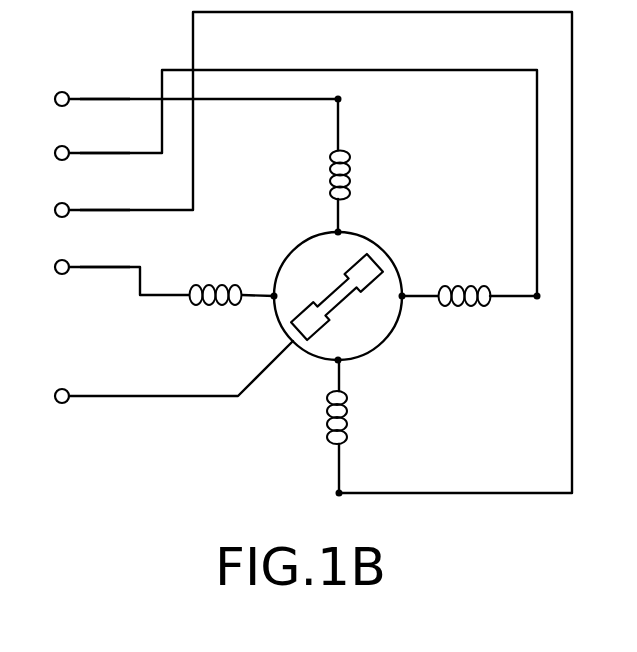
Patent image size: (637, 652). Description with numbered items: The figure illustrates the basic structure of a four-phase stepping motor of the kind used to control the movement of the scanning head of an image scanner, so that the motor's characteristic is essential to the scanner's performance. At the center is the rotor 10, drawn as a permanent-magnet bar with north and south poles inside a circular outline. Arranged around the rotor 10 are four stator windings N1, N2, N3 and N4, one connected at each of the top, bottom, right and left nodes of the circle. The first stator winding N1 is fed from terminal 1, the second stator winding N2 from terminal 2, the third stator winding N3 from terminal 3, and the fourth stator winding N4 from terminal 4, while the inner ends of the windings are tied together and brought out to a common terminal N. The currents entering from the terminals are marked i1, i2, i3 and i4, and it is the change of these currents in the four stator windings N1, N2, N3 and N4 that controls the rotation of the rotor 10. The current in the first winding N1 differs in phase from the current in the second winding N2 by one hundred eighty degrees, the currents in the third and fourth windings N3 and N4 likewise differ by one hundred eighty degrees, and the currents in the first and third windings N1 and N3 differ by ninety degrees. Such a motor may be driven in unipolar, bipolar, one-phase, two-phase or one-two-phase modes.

The rotor 10 is at (383, 250).
The first stator winding N1 is at (332, 151).
The second stator winding N2 is at (346, 440).
The third stator winding N3 is at (477, 287).
The fourth stator winding N4 is at (195, 306).
The first drive terminal 1 is at (47, 101).
The second drive terminal 2 is at (47, 210).
The third drive terminal 3 is at (47, 154).
The fourth drive terminal 4 is at (47, 264).
The neutral / common terminal N is at (53, 415).
The first coil current i1 is at (105, 81).
The second coil current i2 is at (105, 192).
The third coil current i3 is at (105, 135).
The fourth coil current i4 is at (105, 250).